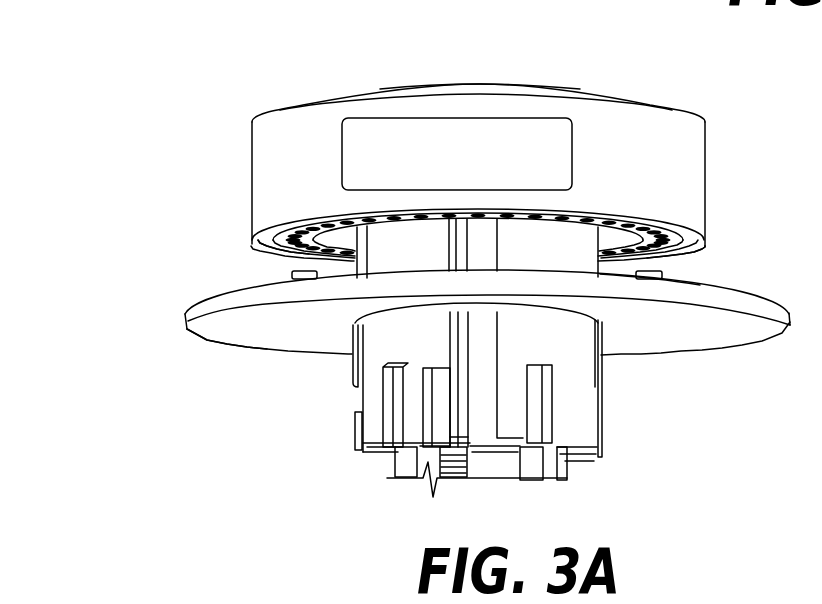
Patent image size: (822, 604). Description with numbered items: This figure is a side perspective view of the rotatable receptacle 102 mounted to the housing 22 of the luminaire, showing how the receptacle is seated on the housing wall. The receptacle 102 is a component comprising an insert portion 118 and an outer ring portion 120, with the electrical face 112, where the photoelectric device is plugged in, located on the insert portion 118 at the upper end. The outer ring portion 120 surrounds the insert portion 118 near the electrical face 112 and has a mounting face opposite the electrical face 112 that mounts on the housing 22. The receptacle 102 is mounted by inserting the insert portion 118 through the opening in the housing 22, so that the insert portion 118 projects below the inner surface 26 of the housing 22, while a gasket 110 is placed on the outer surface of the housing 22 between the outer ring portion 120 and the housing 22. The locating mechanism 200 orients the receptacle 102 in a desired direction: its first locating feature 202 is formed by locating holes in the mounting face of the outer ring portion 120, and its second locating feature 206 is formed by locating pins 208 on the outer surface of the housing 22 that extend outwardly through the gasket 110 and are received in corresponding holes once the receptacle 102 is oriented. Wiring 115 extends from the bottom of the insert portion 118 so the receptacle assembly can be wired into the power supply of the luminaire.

The rotatable receptacle 102 is at (258, 86).
The electrical face 112 is at (548, 86).
The outer ring portion 120 is at (682, 138).
The locating mechanism 200 is at (680, 253).
The housing 22 is at (210, 297).
The first locating feature 202 is at (292, 248).
The inner surface 26 is at (208, 323).
The locating pins 208 is at (294, 278).
The gasket 110 is at (388, 277).
The second locating feature 206 is at (676, 277).
The insert portion 118 is at (583, 415).
The wiring 115 is at (532, 472).